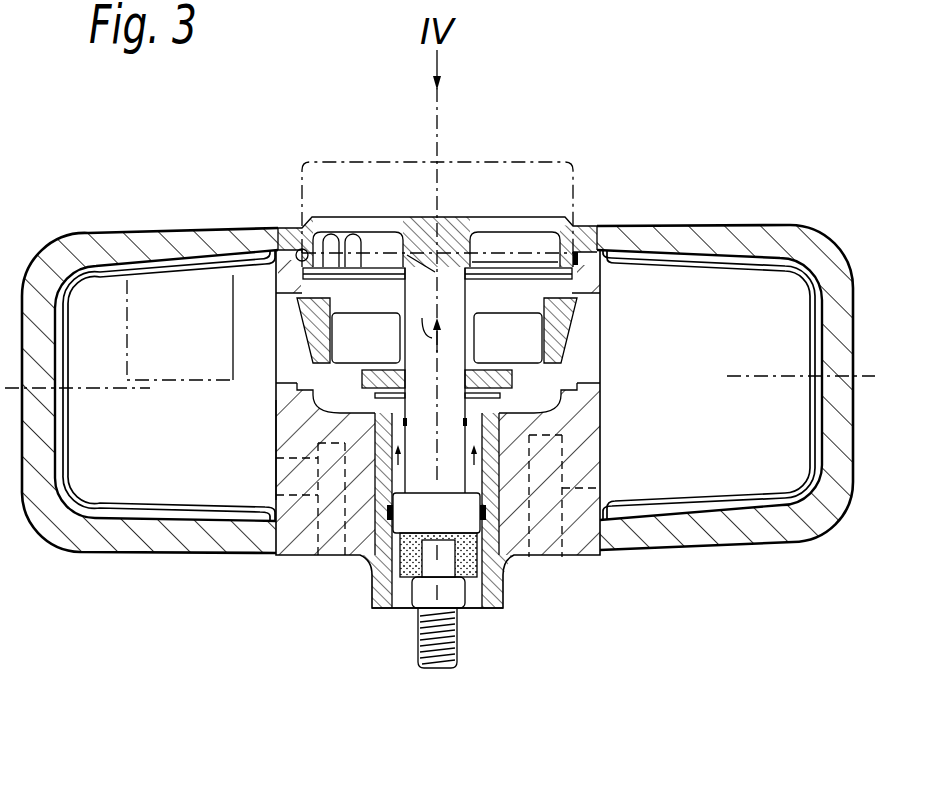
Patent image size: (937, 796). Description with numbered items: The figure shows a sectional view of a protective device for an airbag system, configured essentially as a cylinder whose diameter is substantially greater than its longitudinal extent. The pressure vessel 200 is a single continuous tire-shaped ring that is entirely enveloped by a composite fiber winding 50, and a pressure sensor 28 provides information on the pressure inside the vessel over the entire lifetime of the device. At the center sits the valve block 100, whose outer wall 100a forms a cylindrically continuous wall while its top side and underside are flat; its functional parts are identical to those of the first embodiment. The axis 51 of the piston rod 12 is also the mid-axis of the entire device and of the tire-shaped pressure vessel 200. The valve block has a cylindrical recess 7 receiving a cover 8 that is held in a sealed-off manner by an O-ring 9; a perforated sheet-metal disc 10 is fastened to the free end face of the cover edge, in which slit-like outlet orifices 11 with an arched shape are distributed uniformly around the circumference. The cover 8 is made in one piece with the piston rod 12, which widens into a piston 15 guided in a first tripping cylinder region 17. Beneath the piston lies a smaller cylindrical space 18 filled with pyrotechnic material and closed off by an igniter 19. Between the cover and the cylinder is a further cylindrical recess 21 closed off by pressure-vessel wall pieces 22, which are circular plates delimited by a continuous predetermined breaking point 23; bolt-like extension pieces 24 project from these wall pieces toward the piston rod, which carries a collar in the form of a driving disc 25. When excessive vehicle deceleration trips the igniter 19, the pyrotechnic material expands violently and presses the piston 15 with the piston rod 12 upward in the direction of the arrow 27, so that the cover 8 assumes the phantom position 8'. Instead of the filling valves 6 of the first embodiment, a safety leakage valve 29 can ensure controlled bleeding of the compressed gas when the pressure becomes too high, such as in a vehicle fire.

The composite fiber winding 50 is at (97, 540).
The pressure vessel 200 is at (182, 515).
The pressure sensor 28 is at (143, 285).
The valve block 100 is at (297, 513).
The outer wall 100a is at (275, 447).
The first tripping cylinder region 17 is at (560, 478).
The pressure-vessel wall pieces 22 is at (297, 327).
The predetermined breaking point 23 is at (286, 363).
The bolt-like extension pieces 24 is at (368, 351).
The O-ring 9 is at (303, 258).
The cover 8 is at (437, 192).
The cover position 8' is at (437, 160).
The axis 51 is at (440, 130).
The perforated sheet-metal disc 10 is at (523, 268).
The slit-like outlet orifices 11 is at (353, 238).
The cylindrical recess 7 is at (296, 236).
The piston rod 12 is at (441, 438).
The arrow 27 is at (426, 319).
The cylindrical recess 21 is at (515, 380).
The driving disc 25 is at (502, 396).
The piston 15 is at (446, 523).
The filling valves 6 is at (338, 545).
The cylindrical space 18 is at (503, 610).
The igniter 19 is at (430, 670).
The safety leakage valve 29 is at (555, 557).